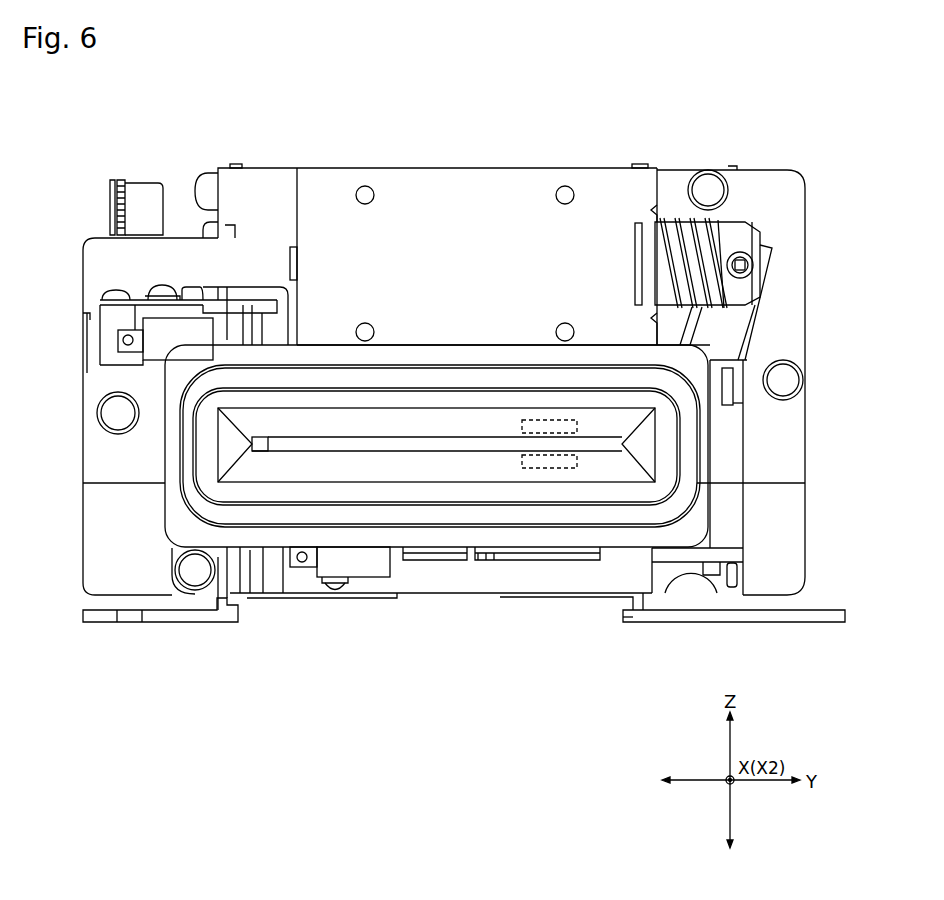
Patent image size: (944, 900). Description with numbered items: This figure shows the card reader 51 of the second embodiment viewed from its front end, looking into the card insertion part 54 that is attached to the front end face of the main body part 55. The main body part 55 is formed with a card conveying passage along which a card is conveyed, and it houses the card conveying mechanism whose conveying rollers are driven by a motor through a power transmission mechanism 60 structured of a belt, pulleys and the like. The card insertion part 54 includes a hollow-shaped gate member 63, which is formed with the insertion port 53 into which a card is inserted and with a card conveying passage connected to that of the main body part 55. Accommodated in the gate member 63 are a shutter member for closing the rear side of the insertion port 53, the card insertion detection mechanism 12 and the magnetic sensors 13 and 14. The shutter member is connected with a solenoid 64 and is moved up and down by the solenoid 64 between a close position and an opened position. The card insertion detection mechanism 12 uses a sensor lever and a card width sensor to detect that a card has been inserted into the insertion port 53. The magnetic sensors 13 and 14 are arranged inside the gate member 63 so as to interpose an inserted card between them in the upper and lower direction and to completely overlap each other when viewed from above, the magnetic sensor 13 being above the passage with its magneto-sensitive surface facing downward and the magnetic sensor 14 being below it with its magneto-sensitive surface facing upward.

The card reader 51 is at (654, 97).
The power transmission mechanism 60 is at (140, 168).
The main body part 55 is at (268, 167).
The solenoid 64 is at (473, 166).
The card insertion detection mechanism 12 is at (138, 322).
The insertion port 53 is at (338, 442).
The magnetic sensor 13 is at (542, 418).
The magnetic sensor 14 is at (538, 468).
The card insertion part 54 is at (769, 328).
The gate member 63 is at (711, 282).